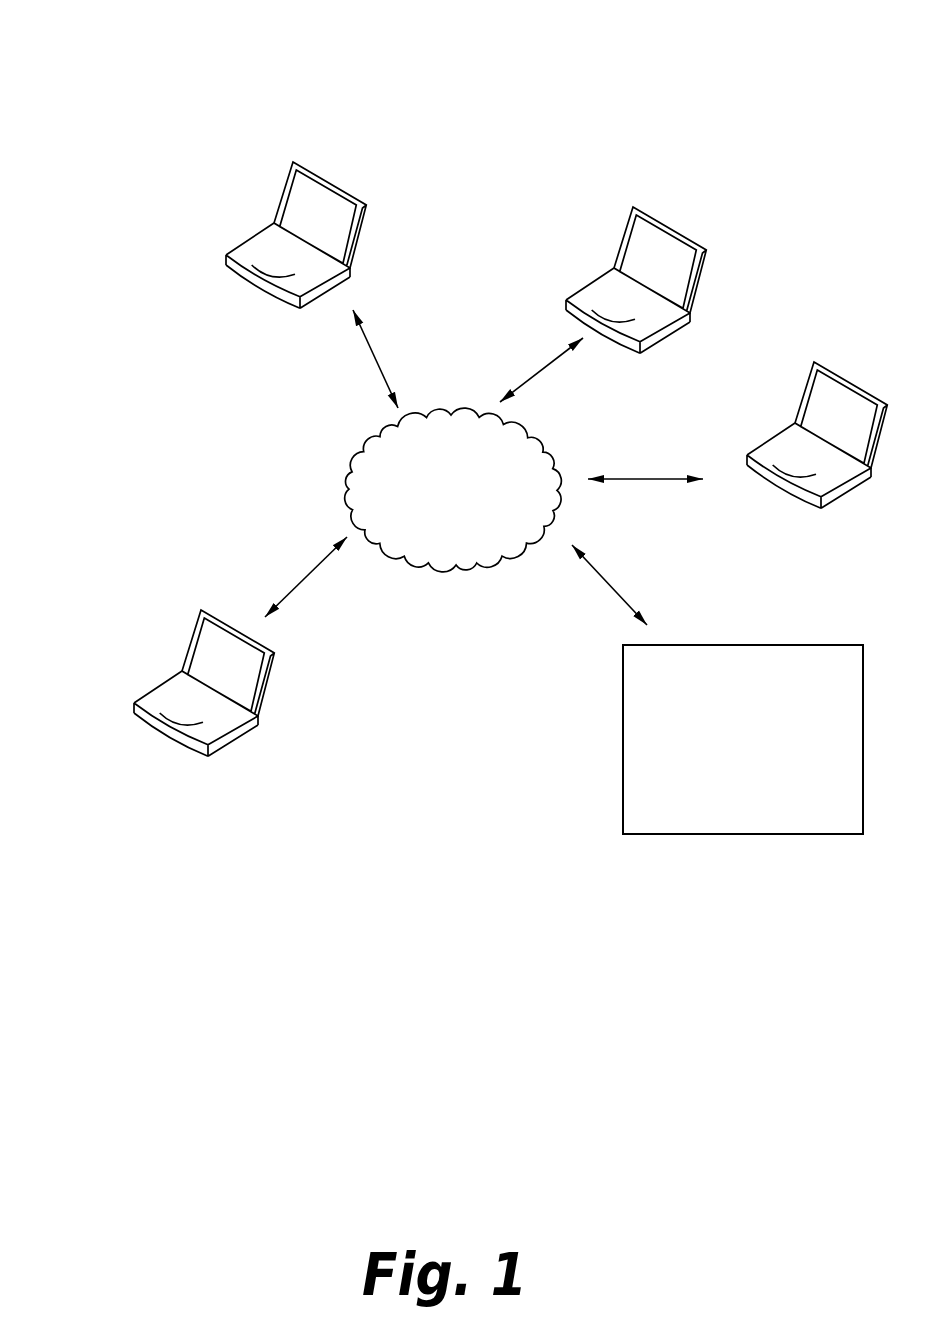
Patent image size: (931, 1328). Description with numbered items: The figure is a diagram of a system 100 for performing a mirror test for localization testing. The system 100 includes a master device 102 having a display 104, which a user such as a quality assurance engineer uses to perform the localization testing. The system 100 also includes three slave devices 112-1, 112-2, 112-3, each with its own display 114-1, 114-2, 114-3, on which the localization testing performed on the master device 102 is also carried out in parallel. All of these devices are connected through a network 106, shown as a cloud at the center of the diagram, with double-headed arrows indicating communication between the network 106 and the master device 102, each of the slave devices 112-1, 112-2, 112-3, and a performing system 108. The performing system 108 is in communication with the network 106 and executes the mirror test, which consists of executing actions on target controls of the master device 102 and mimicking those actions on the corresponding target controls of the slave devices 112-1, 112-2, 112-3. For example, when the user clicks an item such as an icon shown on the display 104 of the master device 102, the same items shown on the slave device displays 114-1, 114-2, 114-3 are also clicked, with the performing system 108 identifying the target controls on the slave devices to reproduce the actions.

The system 100 is at (158, 62).
The master device 102 is at (157, 713).
The display 104 is at (165, 661).
The network 106 is at (417, 460).
The performing system 108 is at (725, 767).
The slave device 112-1 is at (238, 247).
The slave device 112-2 is at (582, 310).
The slave device 112-3 is at (763, 465).
The slave device display 114-1 is at (297, 208).
The slave device display 114-2 is at (590, 260).
The slave device display 114-3 is at (771, 415).